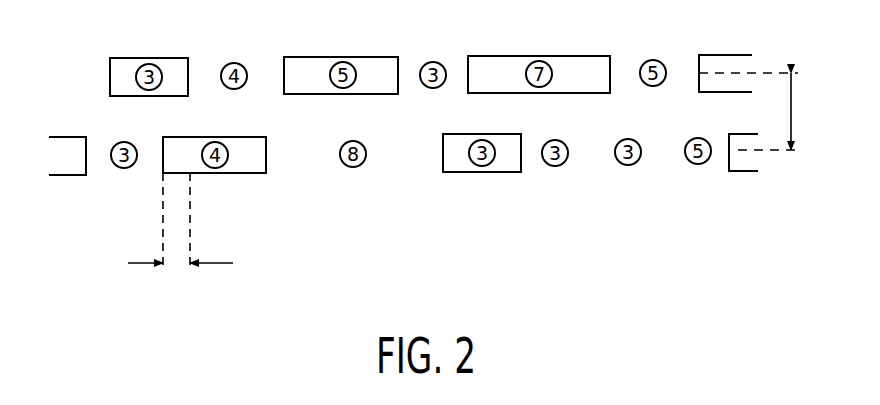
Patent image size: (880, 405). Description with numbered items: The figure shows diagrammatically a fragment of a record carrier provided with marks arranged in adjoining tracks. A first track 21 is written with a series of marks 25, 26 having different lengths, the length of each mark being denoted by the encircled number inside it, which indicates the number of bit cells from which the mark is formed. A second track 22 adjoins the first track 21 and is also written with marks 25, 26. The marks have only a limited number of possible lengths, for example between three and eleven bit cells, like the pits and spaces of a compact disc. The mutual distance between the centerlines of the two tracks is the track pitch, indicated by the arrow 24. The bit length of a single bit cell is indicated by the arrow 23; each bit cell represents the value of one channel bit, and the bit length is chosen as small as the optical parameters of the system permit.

The first track 21 is at (73, 80).
The second track 22 is at (42, 160).
The arrow indicating bit length 23 is at (197, 218).
The arrow indicating track pitch 24 is at (791, 107).
The mark 25 is at (212, 68).
The mark 26 is at (122, 68).